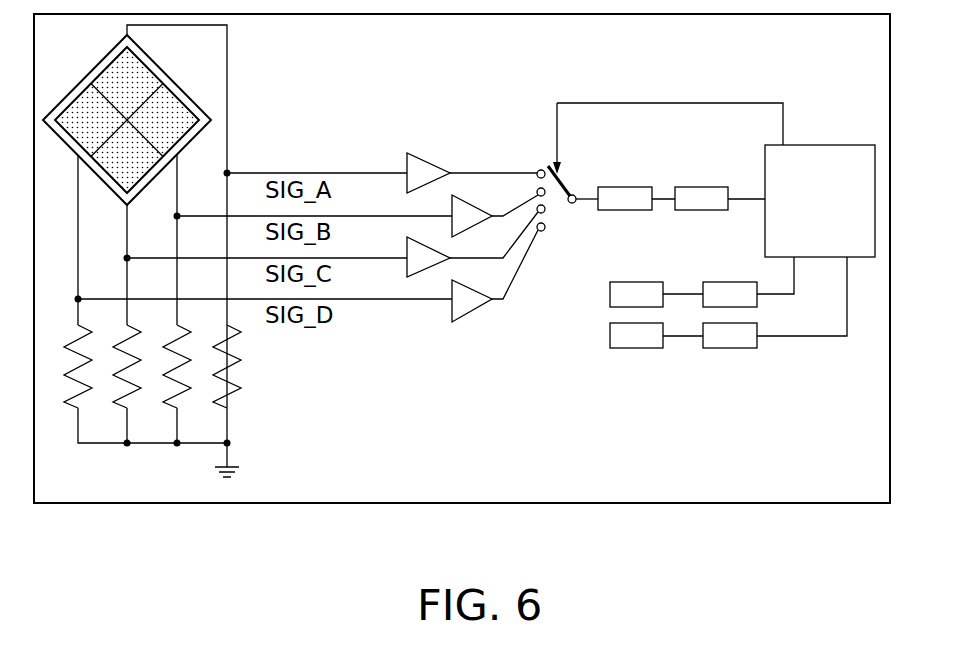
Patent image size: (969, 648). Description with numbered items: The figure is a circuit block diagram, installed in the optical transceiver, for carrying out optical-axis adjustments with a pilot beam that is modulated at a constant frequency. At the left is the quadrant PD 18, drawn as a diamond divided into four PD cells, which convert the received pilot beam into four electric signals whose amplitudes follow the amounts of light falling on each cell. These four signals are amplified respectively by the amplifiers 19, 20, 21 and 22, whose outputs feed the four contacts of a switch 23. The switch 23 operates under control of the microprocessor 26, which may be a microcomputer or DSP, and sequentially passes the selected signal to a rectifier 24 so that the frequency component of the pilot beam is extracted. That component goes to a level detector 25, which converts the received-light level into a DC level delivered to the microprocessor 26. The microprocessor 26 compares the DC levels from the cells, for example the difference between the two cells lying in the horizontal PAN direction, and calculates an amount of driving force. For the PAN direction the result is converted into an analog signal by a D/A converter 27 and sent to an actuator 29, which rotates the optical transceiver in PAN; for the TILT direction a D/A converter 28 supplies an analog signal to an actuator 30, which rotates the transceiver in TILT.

The quadrant PD 18 is at (194, 88).
The amplifier 19 is at (424, 153).
The amplifier 20 is at (473, 205).
The amplifier 21 is at (407, 246).
The amplifier 22 is at (469, 313).
The switch 23 is at (566, 210).
The rectifier 24 is at (624, 187).
The level detector 25 is at (702, 187).
The microprocessor 26 is at (830, 145).
The D/A converter 27 is at (730, 282).
The D/A converter 28 is at (730, 348).
The actuator 29 is at (637, 282).
The actuator 30 is at (637, 348).